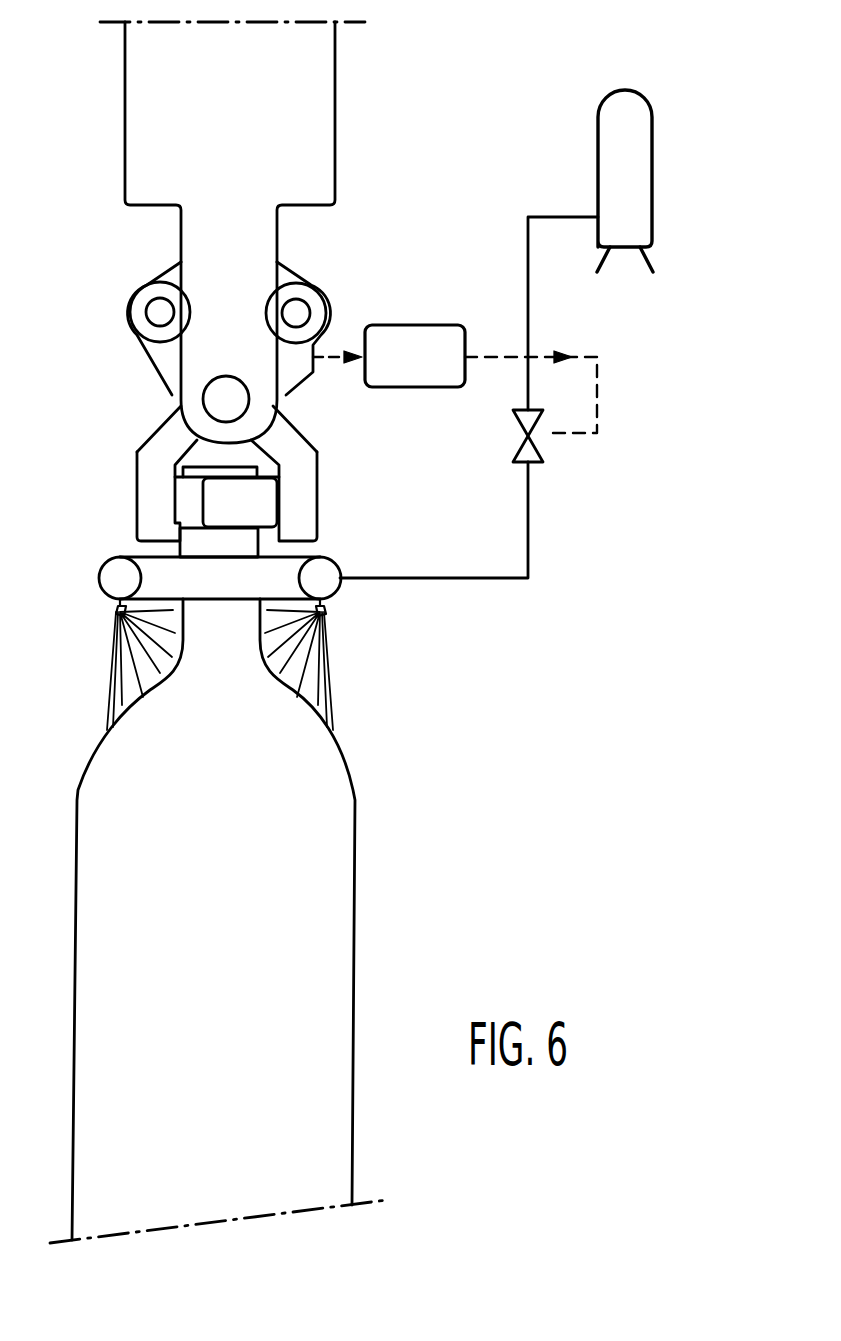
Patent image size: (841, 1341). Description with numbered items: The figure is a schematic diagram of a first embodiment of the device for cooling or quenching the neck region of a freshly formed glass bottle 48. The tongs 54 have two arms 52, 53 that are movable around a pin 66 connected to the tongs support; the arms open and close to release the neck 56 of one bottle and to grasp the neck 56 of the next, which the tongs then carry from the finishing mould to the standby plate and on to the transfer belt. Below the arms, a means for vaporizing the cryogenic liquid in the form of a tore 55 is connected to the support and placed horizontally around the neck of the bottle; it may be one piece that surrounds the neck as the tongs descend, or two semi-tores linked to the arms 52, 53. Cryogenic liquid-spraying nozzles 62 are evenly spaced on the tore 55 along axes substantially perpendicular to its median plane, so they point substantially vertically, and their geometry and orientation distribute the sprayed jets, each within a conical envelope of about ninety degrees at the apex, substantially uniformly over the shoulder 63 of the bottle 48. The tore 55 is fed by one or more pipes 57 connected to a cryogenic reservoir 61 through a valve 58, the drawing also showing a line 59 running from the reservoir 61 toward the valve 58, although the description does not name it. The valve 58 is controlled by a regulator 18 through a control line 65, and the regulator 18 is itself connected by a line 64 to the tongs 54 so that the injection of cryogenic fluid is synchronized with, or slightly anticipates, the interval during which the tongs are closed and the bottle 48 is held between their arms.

The regulator 18 is at (407, 340).
The bottle 48 is at (355, 914).
The arm 52 is at (285, 447).
The arm 53 is at (168, 440).
The tongs 54 is at (315, 98).
The tore 55 is at (343, 557).
The neck 56 is at (307, 551).
The pipe 57 is at (420, 578).
The valve 58 is at (512, 428).
The feed line 59 is at (528, 290).
The cryogenic reservoir 61 is at (635, 188).
The cryogenic liquid-spraying nozzle 62 is at (112, 608).
The shoulder 63 is at (153, 685).
The line 64 is at (320, 353).
The control line 65 is at (597, 388).
The pin 66 is at (226, 393).